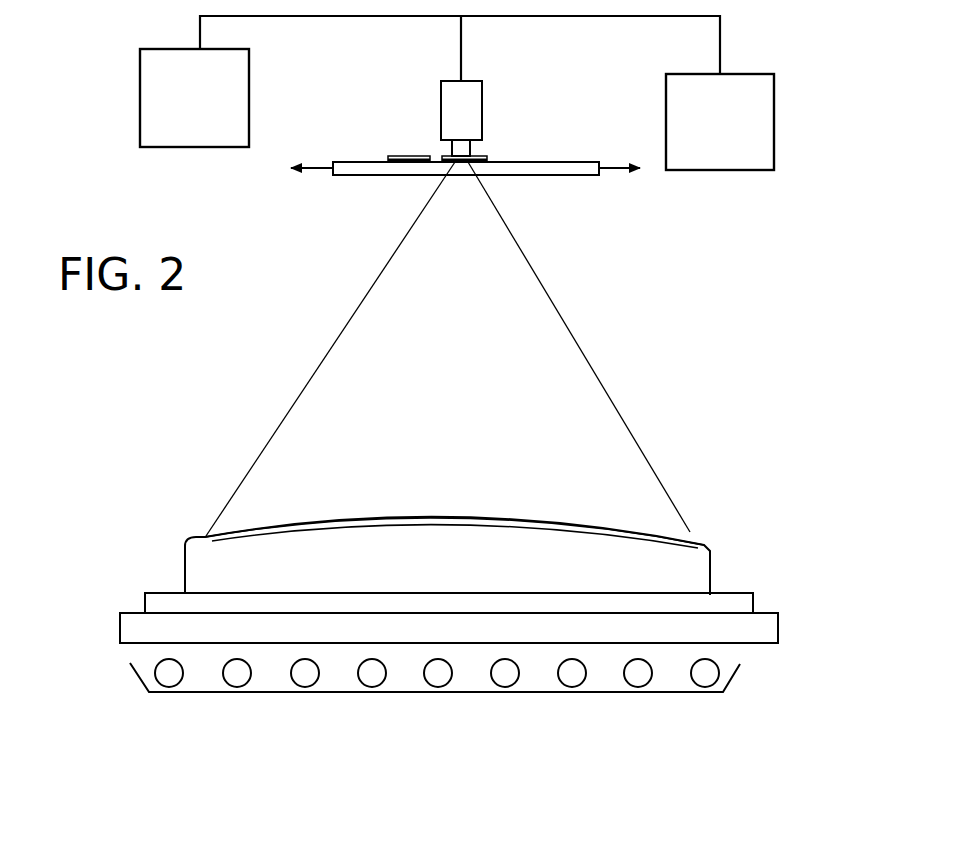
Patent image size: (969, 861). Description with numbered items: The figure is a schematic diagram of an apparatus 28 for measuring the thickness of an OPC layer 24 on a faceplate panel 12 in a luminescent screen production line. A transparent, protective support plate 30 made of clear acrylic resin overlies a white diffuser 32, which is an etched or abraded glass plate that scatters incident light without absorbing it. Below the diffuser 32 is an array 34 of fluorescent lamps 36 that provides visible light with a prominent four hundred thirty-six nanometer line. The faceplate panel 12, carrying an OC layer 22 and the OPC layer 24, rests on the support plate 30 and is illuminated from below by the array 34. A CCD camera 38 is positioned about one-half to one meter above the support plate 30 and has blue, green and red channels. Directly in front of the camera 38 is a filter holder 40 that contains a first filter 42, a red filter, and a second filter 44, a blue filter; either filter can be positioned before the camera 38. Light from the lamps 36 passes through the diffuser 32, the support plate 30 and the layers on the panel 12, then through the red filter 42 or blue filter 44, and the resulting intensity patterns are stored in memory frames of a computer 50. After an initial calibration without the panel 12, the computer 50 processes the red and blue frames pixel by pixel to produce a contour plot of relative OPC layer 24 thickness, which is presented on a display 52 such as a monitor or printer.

The faceplate panel 12 is at (478, 522).
The OC layer 22 is at (330, 520).
The OPC layer 24 is at (500, 530).
The apparatus 28 is at (660, 296).
The support plate 30 is at (735, 594).
The diffuser 32 is at (133, 617).
The array 34 is at (382, 686).
The fluorescent lamps 36 is at (372, 686).
The CCD camera 38 is at (478, 81).
The filter holder 40 is at (370, 177).
The first filter 42 is at (481, 157).
The second filter 44 is at (405, 155).
The computer 50 is at (761, 130).
The display 52 is at (138, 103).